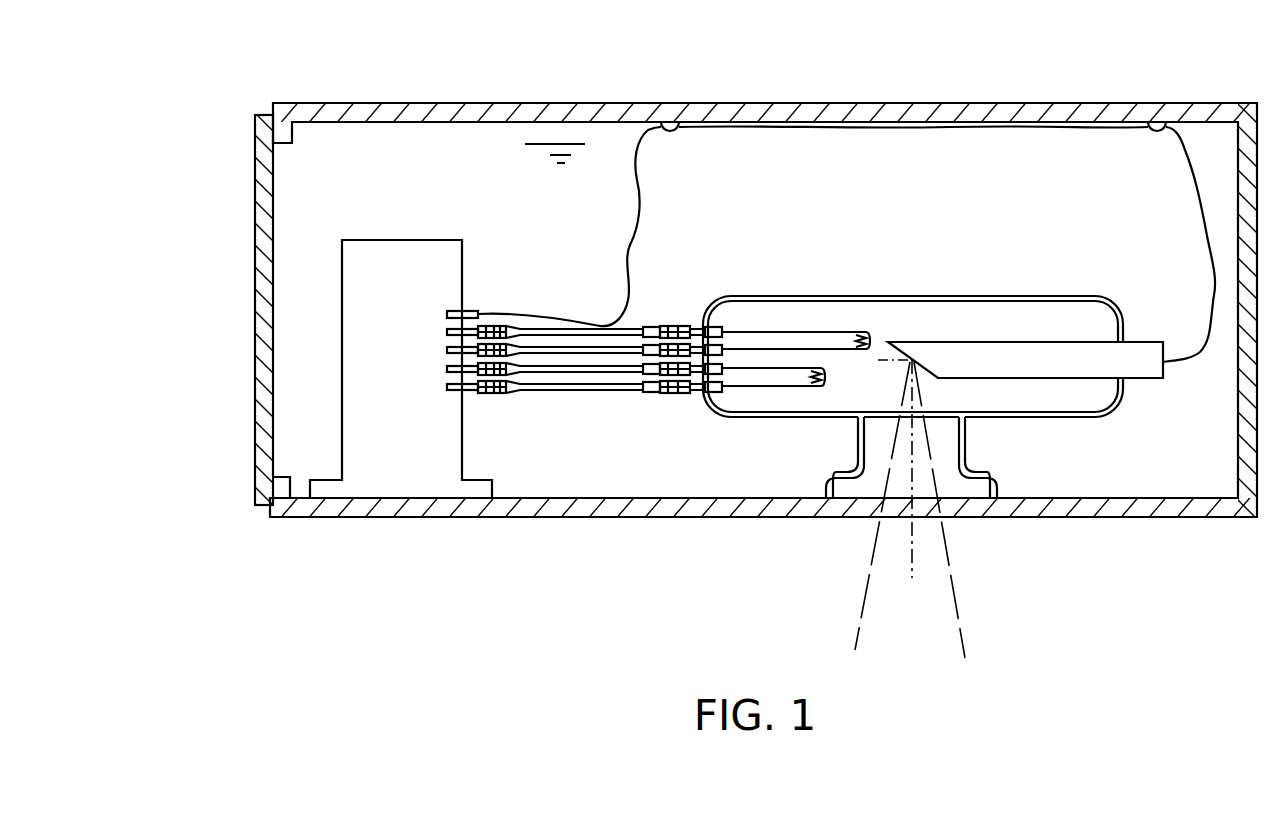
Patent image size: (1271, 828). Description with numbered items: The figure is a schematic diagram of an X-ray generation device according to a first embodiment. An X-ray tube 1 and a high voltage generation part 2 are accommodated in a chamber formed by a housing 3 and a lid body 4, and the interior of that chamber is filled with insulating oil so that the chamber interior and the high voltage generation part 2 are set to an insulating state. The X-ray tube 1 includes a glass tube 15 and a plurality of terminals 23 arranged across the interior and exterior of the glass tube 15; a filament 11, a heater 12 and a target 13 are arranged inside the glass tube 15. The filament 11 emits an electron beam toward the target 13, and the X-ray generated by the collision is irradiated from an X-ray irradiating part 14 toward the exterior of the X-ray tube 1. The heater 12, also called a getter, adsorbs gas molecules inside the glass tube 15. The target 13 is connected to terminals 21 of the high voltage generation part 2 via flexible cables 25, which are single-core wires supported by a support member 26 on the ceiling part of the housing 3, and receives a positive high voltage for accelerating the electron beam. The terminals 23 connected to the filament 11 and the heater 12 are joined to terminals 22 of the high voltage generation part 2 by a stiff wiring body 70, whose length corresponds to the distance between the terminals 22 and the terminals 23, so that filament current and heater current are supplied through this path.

The X-ray tube 1 is at (924, 433).
The high voltage generation part 2 is at (429, 326).
The housing 3 is at (890, 103).
The lid body 4 is at (254, 300).
The filament 11 is at (869, 333).
The heater 12 is at (818, 390).
The target 13 is at (982, 357).
The X-ray irradiating part 14 is at (889, 590).
The glass tube 15 is at (1075, 296).
The terminals 21 is at (480, 310).
The terminals 22 is at (447, 350).
The terminals 23 is at (724, 350).
The flexible cables 25 is at (633, 222).
The support member 26 is at (672, 131).
The wiring body 70 is at (562, 336).